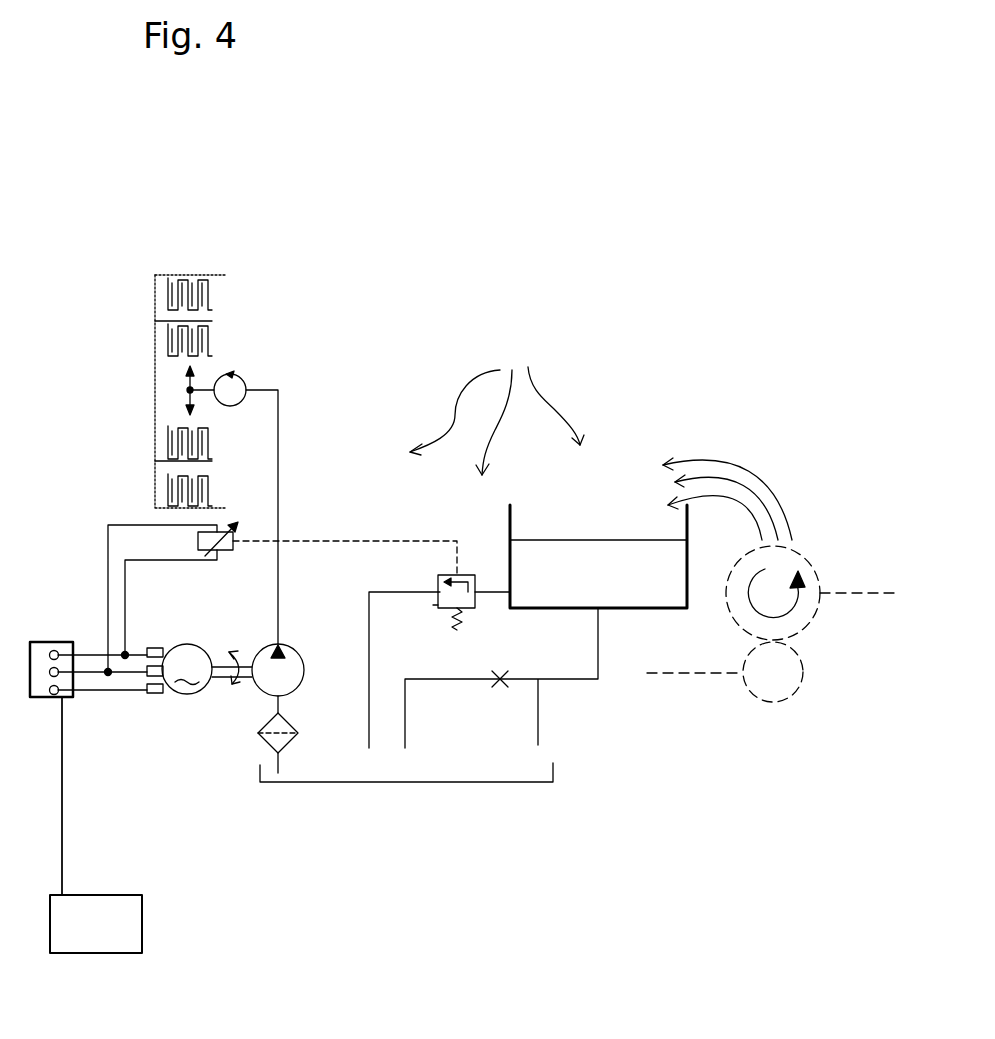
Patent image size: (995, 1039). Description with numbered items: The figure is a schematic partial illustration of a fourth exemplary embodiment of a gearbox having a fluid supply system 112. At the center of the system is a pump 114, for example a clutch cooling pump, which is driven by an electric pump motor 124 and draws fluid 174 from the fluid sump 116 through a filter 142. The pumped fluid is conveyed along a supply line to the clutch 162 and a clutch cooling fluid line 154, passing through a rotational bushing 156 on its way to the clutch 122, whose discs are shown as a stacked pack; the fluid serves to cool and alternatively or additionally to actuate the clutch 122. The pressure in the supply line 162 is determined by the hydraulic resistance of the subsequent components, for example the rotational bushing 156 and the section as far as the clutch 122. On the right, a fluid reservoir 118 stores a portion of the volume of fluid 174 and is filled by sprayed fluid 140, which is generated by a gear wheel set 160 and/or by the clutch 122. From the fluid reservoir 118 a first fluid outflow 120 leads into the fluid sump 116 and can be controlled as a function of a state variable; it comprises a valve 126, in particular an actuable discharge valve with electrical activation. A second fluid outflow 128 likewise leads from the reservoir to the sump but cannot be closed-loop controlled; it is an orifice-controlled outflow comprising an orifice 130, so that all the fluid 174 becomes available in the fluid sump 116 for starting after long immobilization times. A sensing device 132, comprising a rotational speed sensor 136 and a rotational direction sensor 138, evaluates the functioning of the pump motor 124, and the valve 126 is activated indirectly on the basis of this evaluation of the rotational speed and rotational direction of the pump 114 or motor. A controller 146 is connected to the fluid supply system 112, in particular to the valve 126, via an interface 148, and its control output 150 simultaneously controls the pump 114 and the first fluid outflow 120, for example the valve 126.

The fluid supply system 112 is at (497, 402).
The pump 114 is at (290, 642).
The fluid sump 116 is at (348, 783).
The fluid reservoir 118 is at (615, 608).
The first fluid outflow 120 is at (383, 594).
The clutch 122 is at (190, 276).
The pump motor 124 is at (182, 697).
The valve 126 is at (442, 608).
The second fluid outflow 128 is at (538, 745).
The orifice 130 is at (500, 684).
The sensing device 132 is at (215, 532).
The rotational speed sensor 136 is at (158, 281).
The rotational direction sensor 138 is at (188, 356).
The sprayed fluid 140 is at (705, 465).
The filter 142 is at (258, 735).
The controller/actuator 146 is at (117, 936).
The interface 148 is at (132, 796).
The control output 150 is at (62, 888).
The clutch cooling fluid line 154 is at (277, 610).
The rotational bushing 156 is at (238, 375).
The gear wheel set 160 is at (760, 673).
The supply line to the clutch 162 is at (273, 388).
The fluid 174 is at (640, 593).